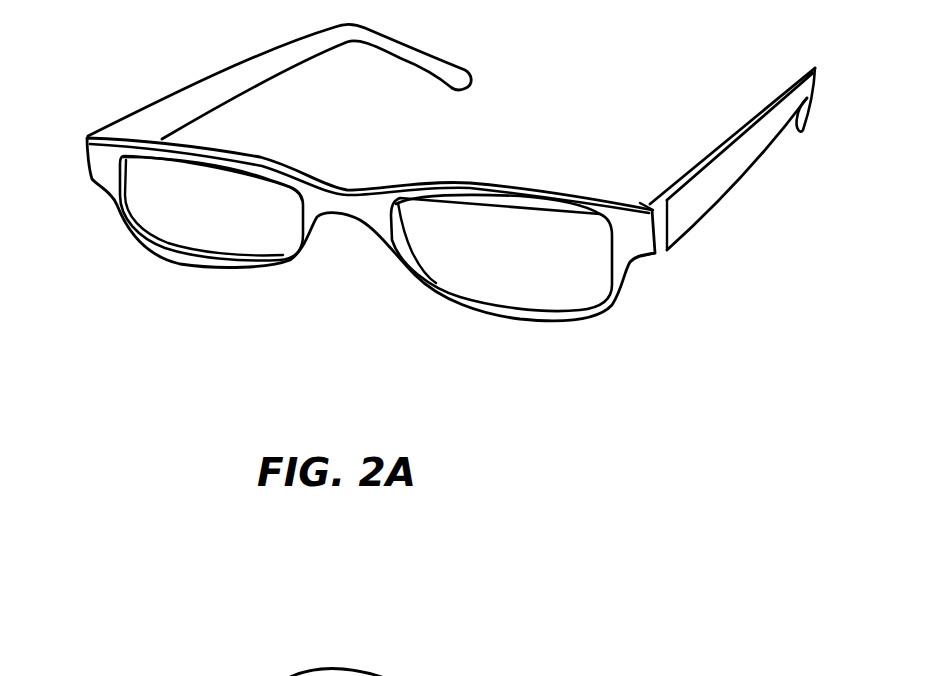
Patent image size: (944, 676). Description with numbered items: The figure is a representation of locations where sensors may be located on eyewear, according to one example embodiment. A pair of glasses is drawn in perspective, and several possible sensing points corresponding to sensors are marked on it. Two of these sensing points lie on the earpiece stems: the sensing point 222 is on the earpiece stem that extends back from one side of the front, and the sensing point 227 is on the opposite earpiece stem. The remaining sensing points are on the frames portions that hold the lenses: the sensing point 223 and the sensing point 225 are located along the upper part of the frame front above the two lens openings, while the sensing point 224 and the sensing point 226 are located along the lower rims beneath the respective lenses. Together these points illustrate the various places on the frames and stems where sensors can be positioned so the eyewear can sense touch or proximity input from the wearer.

The sensing point on earpiece stem 222 is at (178, 88).
The sensing point on frames portion 223 is at (252, 153).
The sensing point on frames portion 224 is at (212, 270).
The sensing point on frames portion 225 is at (527, 183).
The sensing point on frames portion 226 is at (515, 318).
The sensing point on earpiece stem 227 is at (730, 183).